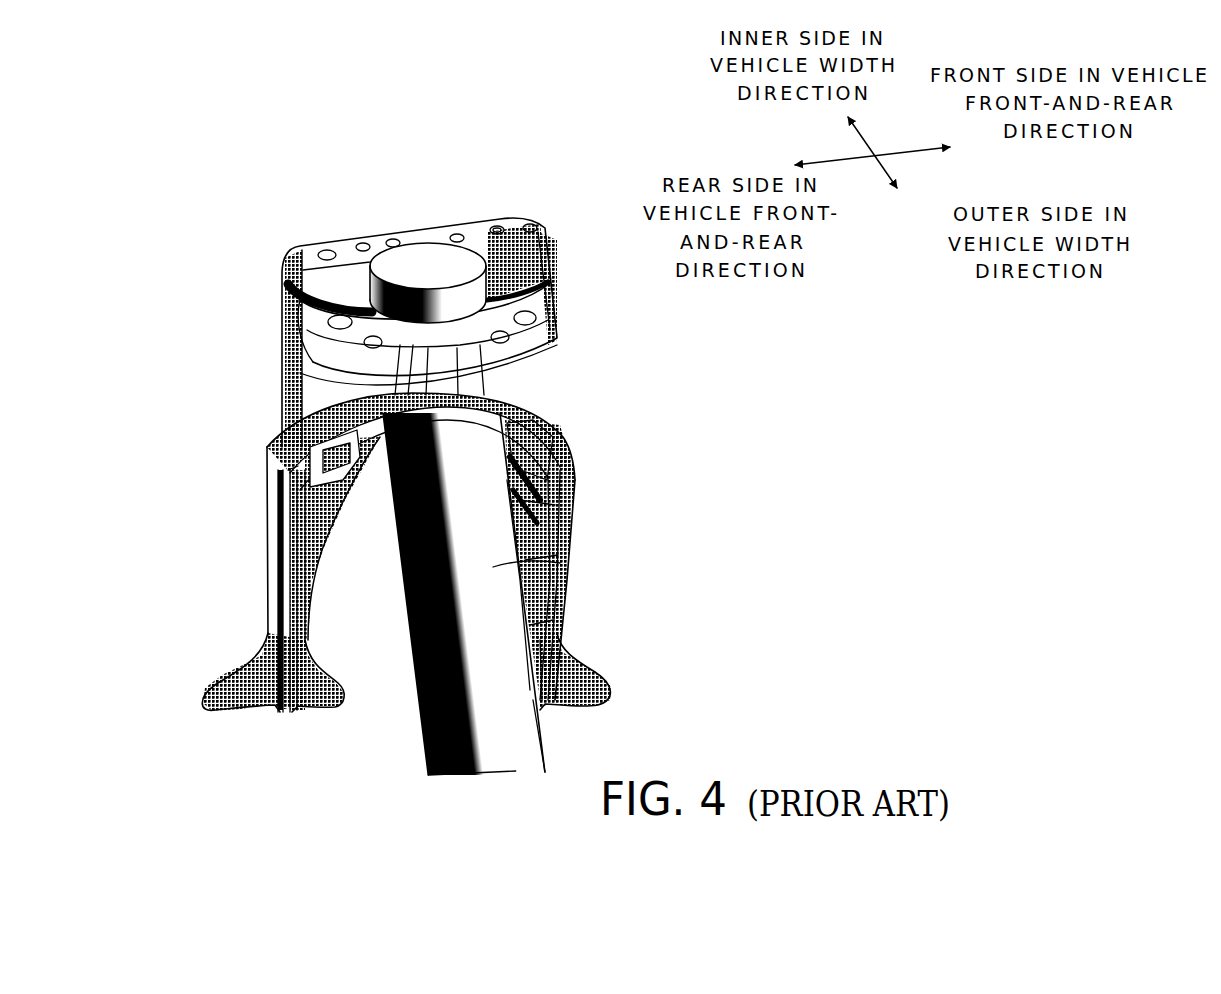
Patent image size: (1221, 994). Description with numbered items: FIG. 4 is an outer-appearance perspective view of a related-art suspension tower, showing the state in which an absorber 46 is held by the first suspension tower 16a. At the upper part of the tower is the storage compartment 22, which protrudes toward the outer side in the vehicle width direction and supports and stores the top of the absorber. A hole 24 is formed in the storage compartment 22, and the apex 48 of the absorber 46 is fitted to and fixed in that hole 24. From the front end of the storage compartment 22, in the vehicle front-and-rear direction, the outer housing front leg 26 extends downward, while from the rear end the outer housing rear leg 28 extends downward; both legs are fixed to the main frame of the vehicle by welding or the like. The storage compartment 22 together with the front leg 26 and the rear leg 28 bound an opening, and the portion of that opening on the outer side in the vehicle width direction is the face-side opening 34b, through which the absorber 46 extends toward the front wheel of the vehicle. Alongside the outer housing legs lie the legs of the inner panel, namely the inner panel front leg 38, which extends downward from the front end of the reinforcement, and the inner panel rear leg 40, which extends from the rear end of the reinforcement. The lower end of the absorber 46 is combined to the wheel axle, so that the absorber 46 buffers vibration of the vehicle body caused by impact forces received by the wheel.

The first suspension tower 16a is at (512, 203).
The storage compartment 22 is at (284, 279).
The apex 48 is at (505, 233).
The hole 24 is at (457, 264).
The inner panel front leg 38 is at (570, 525).
The absorber 46 is at (530, 537).
The outer housing front leg 26 is at (563, 620).
The face-side opening 34b is at (277, 553).
The outer housing rear leg 28 is at (267, 637).
The inner panel rear leg 40 is at (338, 585).